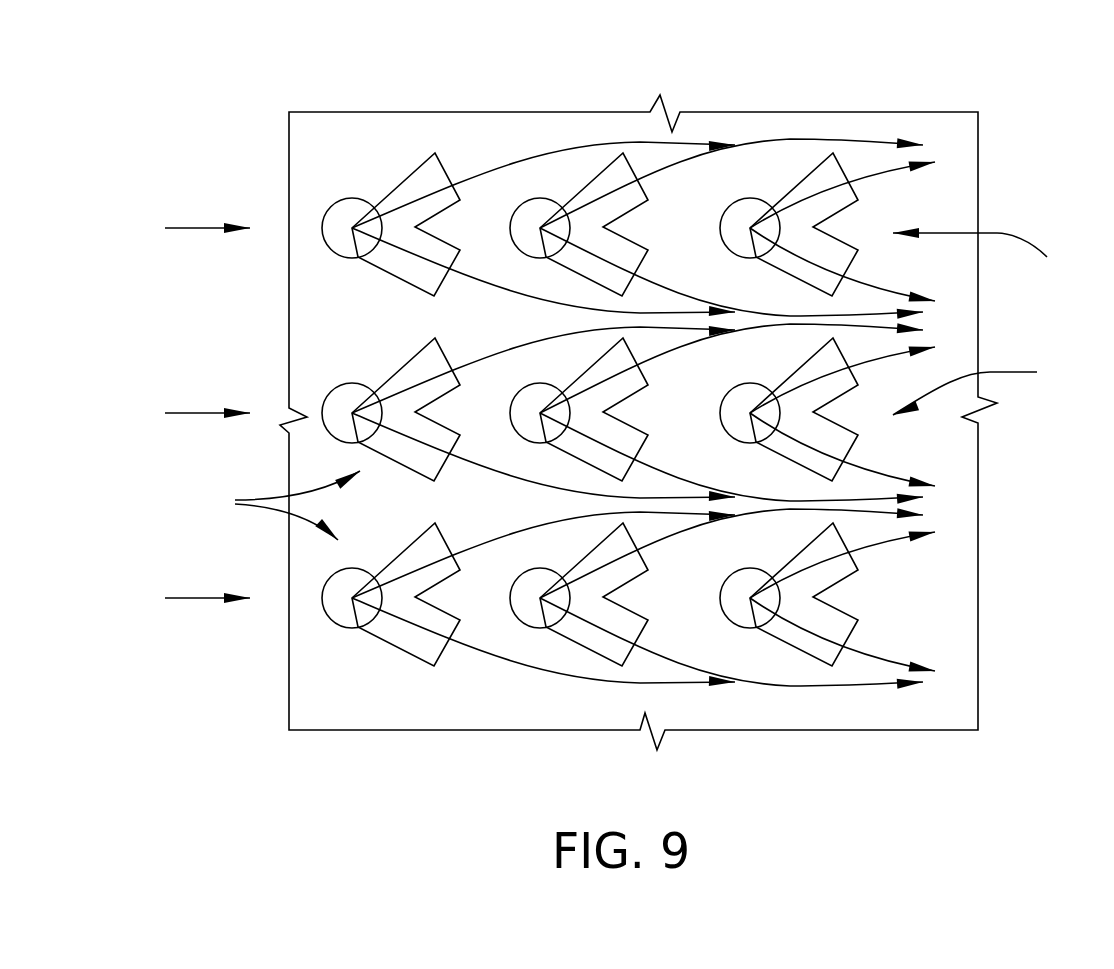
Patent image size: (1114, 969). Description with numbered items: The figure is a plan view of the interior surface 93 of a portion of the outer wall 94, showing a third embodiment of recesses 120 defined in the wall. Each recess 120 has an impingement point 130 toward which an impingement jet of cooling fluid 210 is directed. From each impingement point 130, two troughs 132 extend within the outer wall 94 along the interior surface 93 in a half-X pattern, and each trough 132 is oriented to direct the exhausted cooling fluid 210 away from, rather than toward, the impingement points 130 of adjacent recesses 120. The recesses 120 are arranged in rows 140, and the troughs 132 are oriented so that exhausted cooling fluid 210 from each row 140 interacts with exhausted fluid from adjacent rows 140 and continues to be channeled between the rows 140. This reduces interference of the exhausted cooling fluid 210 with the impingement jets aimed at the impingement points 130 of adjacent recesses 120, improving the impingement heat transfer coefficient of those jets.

The interior surface 93 is at (320, 707).
The outer wall 94 is at (289, 164).
The recess 120 is at (638, 386).
The impingement point 130 is at (347, 400).
The trough 132 is at (433, 257).
The row 140 is at (180, 413).
The cooling fluid 210 is at (512, 297).